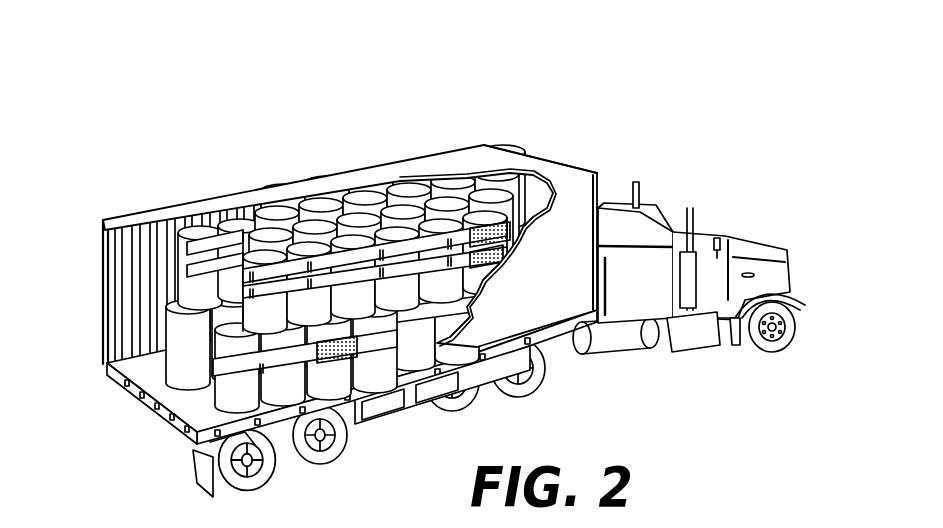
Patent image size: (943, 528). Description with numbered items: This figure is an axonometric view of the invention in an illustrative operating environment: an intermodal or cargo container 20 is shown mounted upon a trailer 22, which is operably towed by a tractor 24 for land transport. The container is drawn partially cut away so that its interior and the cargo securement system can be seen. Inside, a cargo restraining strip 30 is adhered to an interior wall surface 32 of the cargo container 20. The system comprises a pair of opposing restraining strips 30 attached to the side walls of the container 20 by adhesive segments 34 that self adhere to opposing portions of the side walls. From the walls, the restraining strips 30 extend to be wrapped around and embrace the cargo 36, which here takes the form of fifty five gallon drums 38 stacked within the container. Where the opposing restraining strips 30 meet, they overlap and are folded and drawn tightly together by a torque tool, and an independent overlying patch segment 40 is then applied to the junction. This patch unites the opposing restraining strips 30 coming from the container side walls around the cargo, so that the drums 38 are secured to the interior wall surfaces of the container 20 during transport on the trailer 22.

The cargo container 20 is at (531, 155).
The trailer 22 is at (110, 388).
The tractor 24 is at (795, 266).
The cargo restraining strip 30 is at (309, 369).
The interior wall surface 32 is at (181, 227).
The adhesive segment 34 is at (490, 240).
The cargo 36 is at (206, 399).
The fifty five gallon drum 38 is at (272, 211).
The overlying patch segment 40 is at (221, 268).